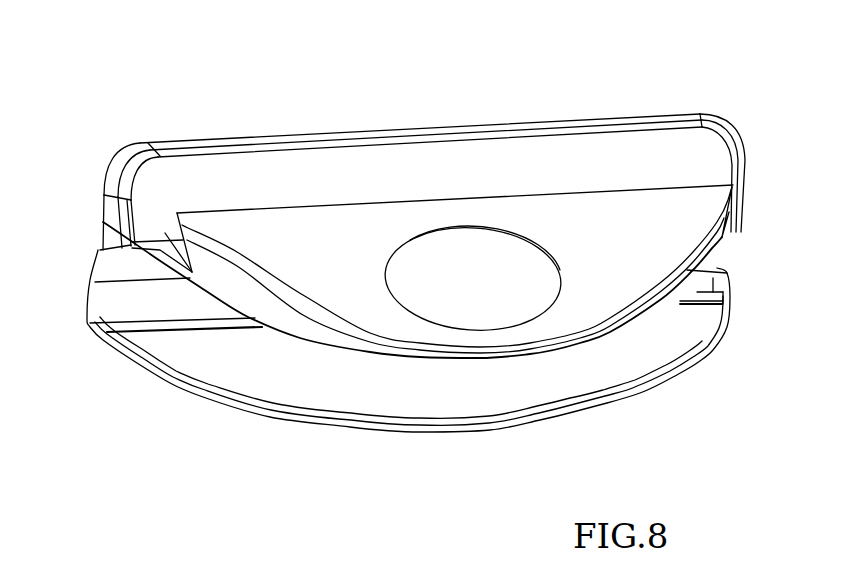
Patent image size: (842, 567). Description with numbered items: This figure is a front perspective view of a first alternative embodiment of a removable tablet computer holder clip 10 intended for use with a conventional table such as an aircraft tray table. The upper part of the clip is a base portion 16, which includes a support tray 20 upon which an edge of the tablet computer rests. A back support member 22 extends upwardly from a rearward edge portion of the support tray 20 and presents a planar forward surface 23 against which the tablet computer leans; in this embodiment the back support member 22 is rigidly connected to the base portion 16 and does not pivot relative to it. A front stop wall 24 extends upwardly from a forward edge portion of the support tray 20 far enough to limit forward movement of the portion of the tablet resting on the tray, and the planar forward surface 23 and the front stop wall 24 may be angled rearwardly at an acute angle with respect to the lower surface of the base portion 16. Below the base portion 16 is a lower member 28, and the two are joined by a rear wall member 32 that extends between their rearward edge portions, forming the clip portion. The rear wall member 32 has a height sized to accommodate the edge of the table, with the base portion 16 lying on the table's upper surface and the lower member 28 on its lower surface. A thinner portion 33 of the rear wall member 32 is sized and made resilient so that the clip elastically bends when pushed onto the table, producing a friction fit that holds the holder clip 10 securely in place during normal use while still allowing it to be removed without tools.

The removable tablet computer holder clip 10 is at (228, 66).
The base portion 16 is at (735, 237).
The support tray 20 is at (93, 290).
The back support member 22 is at (130, 146).
The planar forward surface 23 is at (423, 167).
The front stop wall 24 is at (168, 243).
The lower member 28 is at (590, 383).
The rear wall member 32 is at (97, 252).
The thinner portion 33 is at (103, 243).